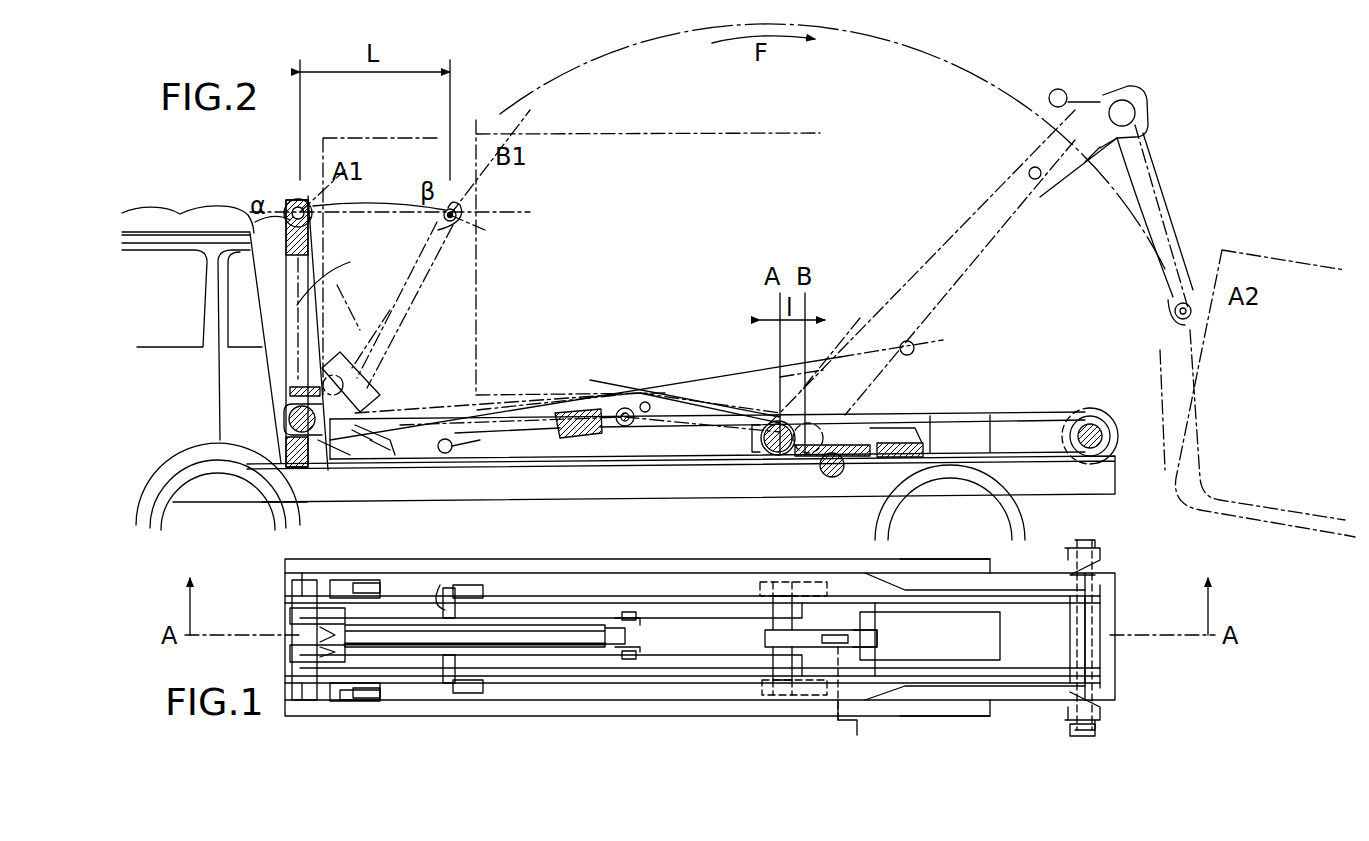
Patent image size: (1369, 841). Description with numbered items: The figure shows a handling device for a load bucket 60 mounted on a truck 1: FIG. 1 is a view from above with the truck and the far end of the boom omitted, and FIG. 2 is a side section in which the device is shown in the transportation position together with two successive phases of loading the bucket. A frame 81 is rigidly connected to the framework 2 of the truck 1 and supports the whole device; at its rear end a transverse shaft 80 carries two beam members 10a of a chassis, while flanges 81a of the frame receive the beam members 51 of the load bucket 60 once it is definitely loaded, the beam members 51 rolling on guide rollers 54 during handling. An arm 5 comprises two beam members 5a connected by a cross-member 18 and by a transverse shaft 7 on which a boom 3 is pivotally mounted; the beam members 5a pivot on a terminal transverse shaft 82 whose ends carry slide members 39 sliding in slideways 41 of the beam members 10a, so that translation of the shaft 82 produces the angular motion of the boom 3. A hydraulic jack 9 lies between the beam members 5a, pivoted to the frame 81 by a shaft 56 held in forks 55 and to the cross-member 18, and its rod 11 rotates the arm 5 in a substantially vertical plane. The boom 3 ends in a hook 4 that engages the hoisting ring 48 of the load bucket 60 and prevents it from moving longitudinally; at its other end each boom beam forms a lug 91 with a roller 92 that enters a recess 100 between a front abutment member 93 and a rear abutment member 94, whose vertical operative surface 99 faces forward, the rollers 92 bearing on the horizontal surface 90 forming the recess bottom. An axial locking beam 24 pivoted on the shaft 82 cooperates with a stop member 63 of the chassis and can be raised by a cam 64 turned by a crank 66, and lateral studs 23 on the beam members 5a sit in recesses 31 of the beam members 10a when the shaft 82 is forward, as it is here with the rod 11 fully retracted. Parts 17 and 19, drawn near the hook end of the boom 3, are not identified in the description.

In FIG. 2, the truck 1 is at (150, 250).
In FIG. 2, the framework 2 is at (207, 490).
In FIG. 2, the boom 3 is at (388, 292).
In FIG. 2, the hook 4 is at (298, 198).
In FIG. 2, the arm 5 is at (918, 258).
In FIG. 2, the beam members 5a is at (698, 440).
In FIG. 1, the beam members 5a is at (698, 610).
In FIG. 2, the transverse shaft 7 is at (296, 405).
In FIG. 1, the transverse shaft 7 is at (325, 692).
In FIG. 1, the hydraulic jack 9 is at (410, 647).
In FIG. 2, the beam members 10a is at (658, 462).
In FIG. 1, the beam members 10a is at (683, 582).
In FIG. 1, the rod 11 is at (603, 622).
In FIG. 2, the hook arm 17 is at (375, 383).
In FIG. 2, the cross-member 18 is at (622, 430).
In FIG. 1, the cross-member 18 is at (628, 610).
In FIG. 2, the hook 19 is at (1145, 134).
In FIG. 2, the lateral studs 23 is at (448, 455).
In FIG. 1, the lateral studs 23 is at (440, 590).
In FIG. 2, the axial locking beam 24 is at (872, 458).
In FIG. 1, the axial locking beam 24 is at (870, 628).
In FIG. 2, the recesses 31 is at (465, 442).
In FIG. 1, the recesses 31 is at (470, 588).
In FIG. 1, the slide members 39 is at (770, 583).
In FIG. 1, the slideways 41 is at (805, 585).
In FIG. 2, the hoisting ring 48 is at (290, 205).
In FIG. 2, the beam members 51 is at (1305, 525).
In FIG. 2, the guide rollers 54 is at (1097, 425).
In FIG. 1, the guide rollers 54 is at (1103, 556).
In FIG. 1, the forks 55 is at (328, 642).
In FIG. 1, the shaft 56 is at (330, 628).
In FIG. 2, the load bucket 60 is at (393, 165).
In FIG. 2, the stop member 63 is at (908, 442).
In FIG. 1, the stop member 63 is at (905, 658).
In FIG. 2, the cam 64 is at (832, 478).
In FIG. 1, the cam 64 is at (840, 633).
In FIG. 1, the crank 66 is at (857, 740).
In FIG. 2, the shaft 80 is at (1078, 428).
In FIG. 1, the shaft 80 is at (1090, 732).
In FIG. 2, the frame 81 is at (292, 465).
In FIG. 1, the frame 81 is at (295, 585).
In FIG. 1, the flanges 81a is at (938, 570).
In FIG. 2, the terminal transverse shaft 82 is at (778, 456).
In FIG. 1, the terminal transverse shaft 82 is at (795, 625).
In FIG. 2, the horizontal surface 90 is at (365, 445).
In FIG. 2, the lug 91 is at (362, 398).
In FIG. 1, the lug 91 is at (325, 702).
In FIG. 2, the rollers 92 is at (342, 452).
In FIG. 1, the rollers 92 is at (375, 582).
In FIG. 2, the abutment member 93 is at (318, 450).
In FIG. 2, the abutment member 94 is at (388, 440).
In FIG. 2, the operative surface 99 is at (382, 435).
In FIG. 1, the recess 100 is at (365, 702).